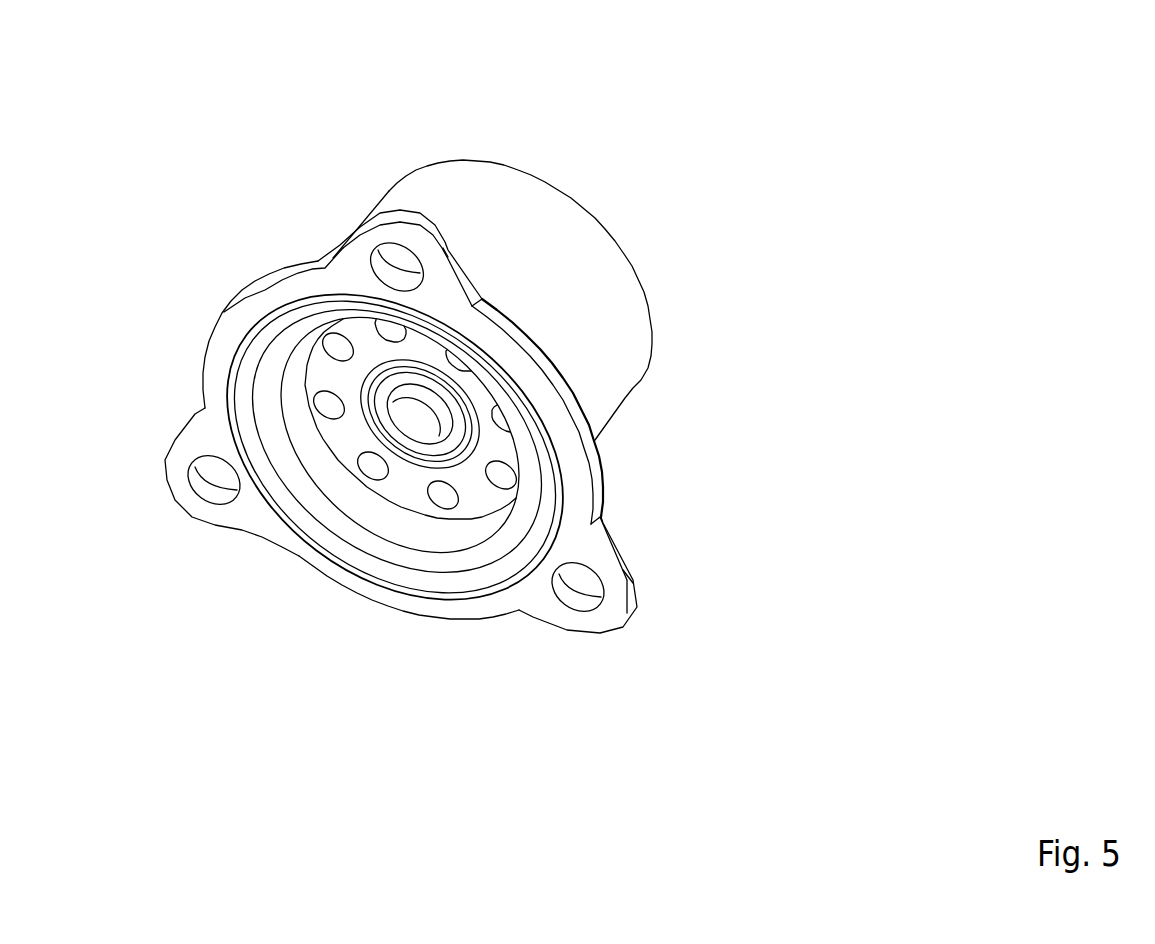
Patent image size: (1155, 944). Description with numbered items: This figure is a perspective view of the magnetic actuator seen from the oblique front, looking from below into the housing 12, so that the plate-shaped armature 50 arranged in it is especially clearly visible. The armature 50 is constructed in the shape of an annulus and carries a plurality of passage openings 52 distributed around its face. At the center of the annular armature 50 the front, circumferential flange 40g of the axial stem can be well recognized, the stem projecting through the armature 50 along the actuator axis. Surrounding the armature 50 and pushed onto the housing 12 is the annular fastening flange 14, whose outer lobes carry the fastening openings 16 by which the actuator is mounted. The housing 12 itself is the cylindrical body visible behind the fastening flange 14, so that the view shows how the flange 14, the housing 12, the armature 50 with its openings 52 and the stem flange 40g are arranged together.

The housing 12 is at (498, 203).
The annular fastening flange 14 is at (348, 266).
The fastening openings 16 is at (213, 489).
The plate-shaped armature 50 is at (346, 438).
The passage openings 52 is at (505, 483).
The front circumferential flange 40g is at (455, 418).